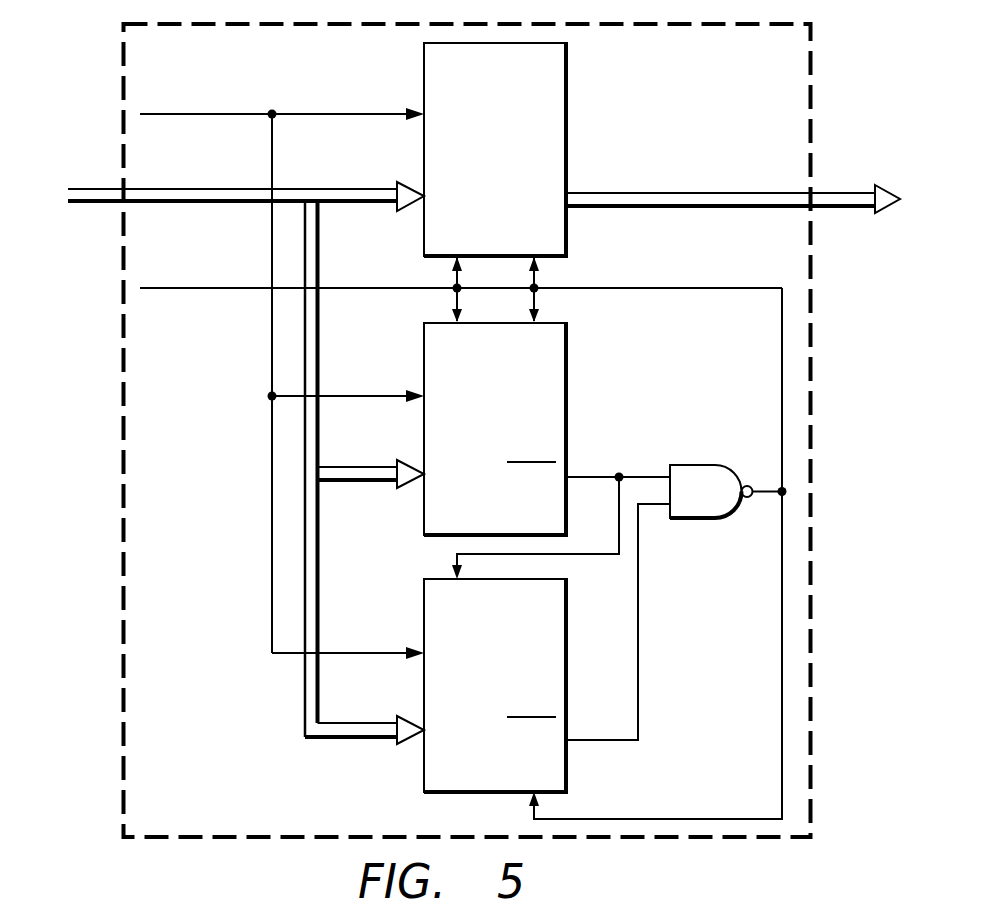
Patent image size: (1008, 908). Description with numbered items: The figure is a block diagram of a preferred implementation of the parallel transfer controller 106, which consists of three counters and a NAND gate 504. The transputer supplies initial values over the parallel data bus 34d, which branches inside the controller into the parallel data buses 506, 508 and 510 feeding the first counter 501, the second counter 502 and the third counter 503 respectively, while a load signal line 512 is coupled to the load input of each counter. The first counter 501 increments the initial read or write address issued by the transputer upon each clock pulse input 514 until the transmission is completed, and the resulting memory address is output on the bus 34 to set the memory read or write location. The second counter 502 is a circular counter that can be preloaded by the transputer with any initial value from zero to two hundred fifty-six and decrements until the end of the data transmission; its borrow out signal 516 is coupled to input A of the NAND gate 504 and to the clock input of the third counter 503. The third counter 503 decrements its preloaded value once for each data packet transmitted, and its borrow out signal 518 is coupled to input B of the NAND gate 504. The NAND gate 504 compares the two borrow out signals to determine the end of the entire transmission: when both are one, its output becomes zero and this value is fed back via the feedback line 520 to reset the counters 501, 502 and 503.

The parallel transfer controller 106 is at (124, 75).
The load signal line 512 is at (167, 112).
The parallel data bus 34d is at (97, 187).
The clock pulse input 514 is at (168, 291).
The first counter 501 is at (424, 85).
The second counter 502 is at (424, 356).
The third counter 503 is at (424, 606).
The parallel data bus 506 is at (378, 188).
The parallel data bus 508 is at (378, 466).
The parallel data bus 510 is at (378, 722).
The borrow out signal 516 is at (597, 476).
The borrow out signal 518 is at (610, 741).
The NAND gate 504 is at (690, 465).
The feedback line 520 is at (762, 490).
The parallel data bus 34 is at (850, 192).